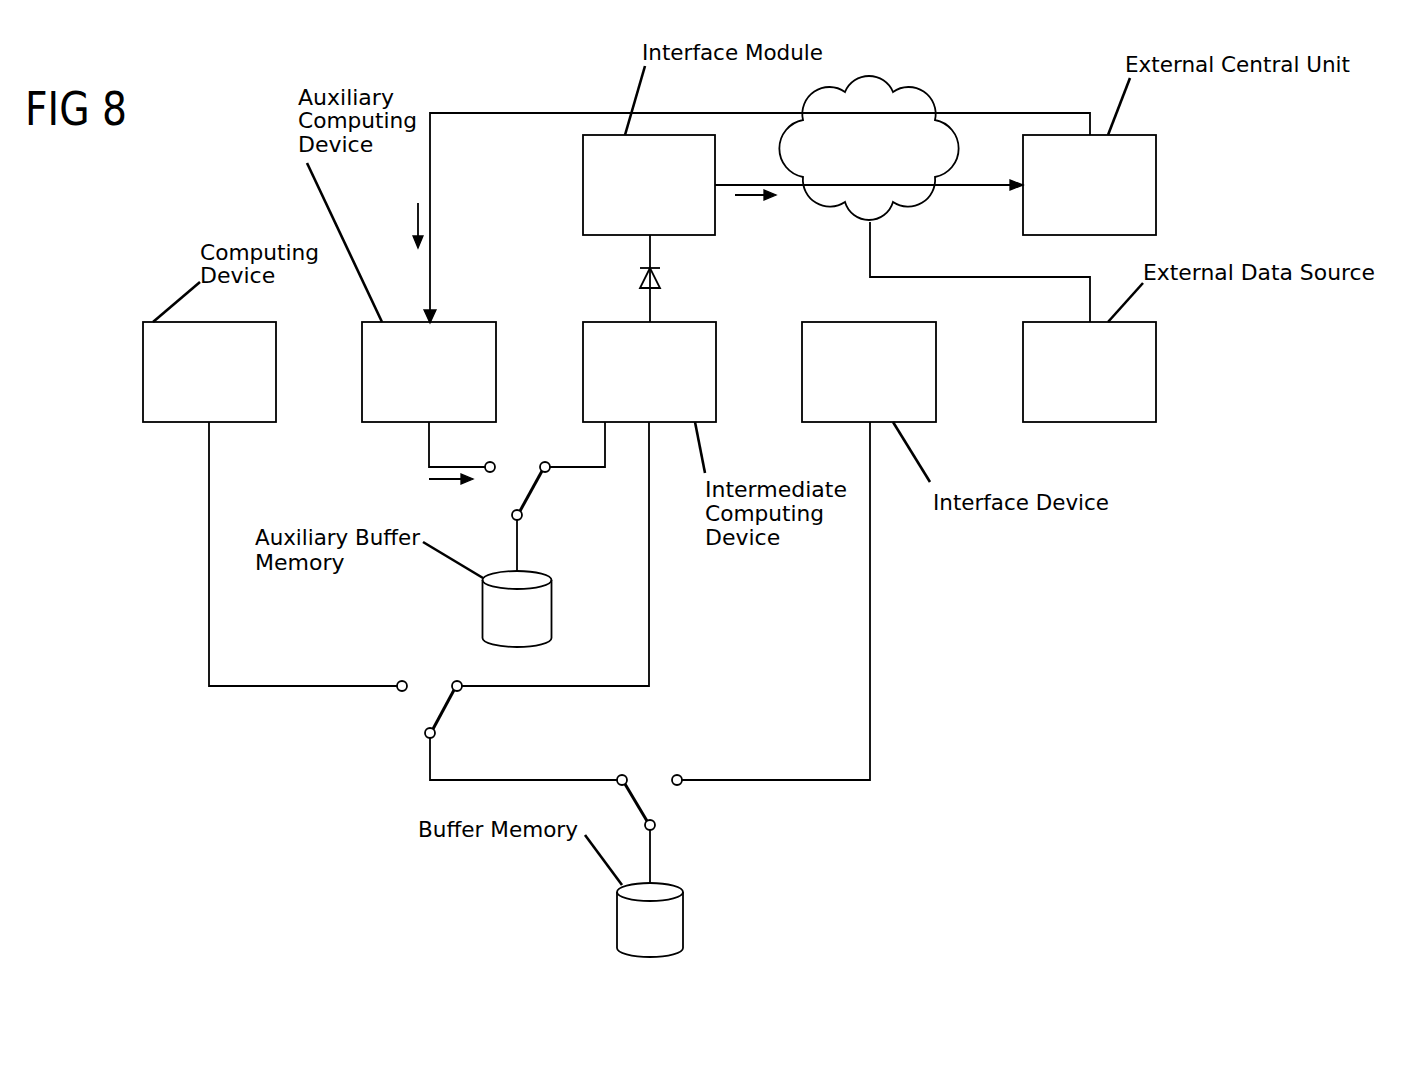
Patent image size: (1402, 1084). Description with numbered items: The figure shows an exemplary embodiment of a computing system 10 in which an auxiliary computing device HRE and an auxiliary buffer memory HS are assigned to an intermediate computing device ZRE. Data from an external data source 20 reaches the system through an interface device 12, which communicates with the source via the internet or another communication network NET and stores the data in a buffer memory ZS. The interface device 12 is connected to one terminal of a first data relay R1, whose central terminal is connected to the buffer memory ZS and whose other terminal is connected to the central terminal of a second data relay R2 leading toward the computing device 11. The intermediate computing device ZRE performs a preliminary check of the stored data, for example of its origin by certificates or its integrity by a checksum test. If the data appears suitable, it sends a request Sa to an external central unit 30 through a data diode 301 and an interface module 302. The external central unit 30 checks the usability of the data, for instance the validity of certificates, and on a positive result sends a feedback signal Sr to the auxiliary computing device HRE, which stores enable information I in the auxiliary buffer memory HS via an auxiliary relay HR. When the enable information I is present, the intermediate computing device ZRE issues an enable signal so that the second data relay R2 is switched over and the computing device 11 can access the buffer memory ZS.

The computing system 10 is at (165, 815).
The computing device 11 is at (194, 387).
The interface device 12 is at (855, 387).
The external data source 20 is at (1076, 387).
The external central unit 30 is at (1076, 200).
The data diode 301 is at (640, 281).
The interface module 302 is at (628, 201).
The auxiliary computing device HRE is at (405, 387).
The intermediate computing device ZRE is at (627, 387).
The auxiliary buffer memory HS is at (534, 632).
The buffer memory ZS is at (636, 942).
The communication network NET is at (848, 165).
The auxiliary relay HR is at (517, 460).
The first data relay R1 is at (650, 770).
The second data relay R2 is at (430, 676).
The feedback signal Sr is at (405, 225).
The request Sa is at (755, 210).
The enable information I is at (451, 492).